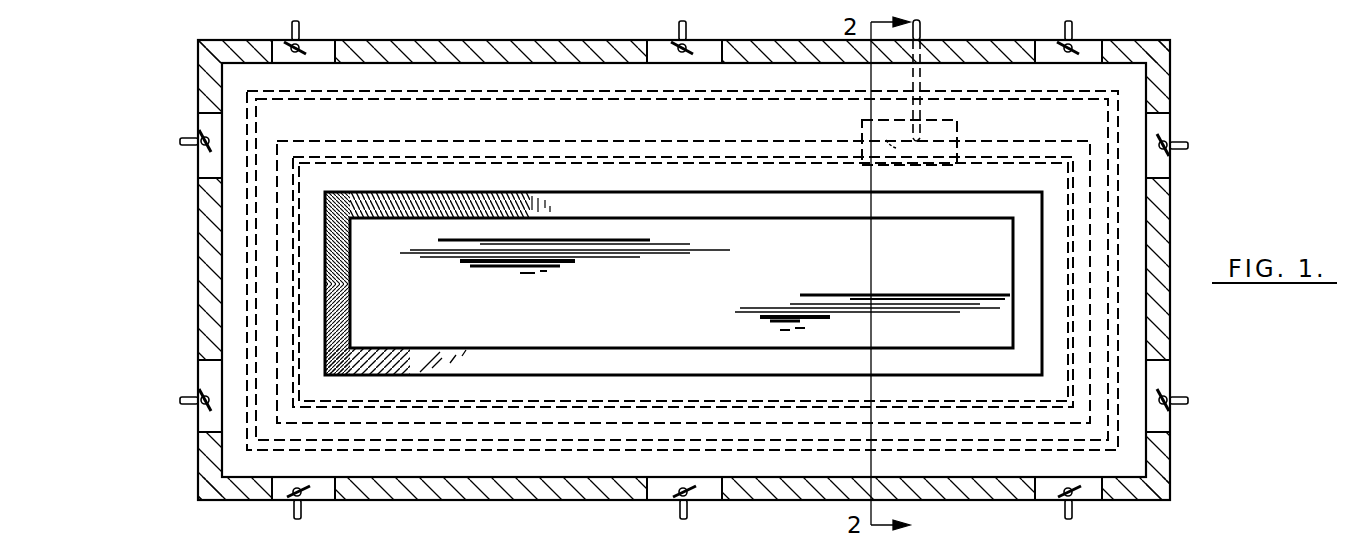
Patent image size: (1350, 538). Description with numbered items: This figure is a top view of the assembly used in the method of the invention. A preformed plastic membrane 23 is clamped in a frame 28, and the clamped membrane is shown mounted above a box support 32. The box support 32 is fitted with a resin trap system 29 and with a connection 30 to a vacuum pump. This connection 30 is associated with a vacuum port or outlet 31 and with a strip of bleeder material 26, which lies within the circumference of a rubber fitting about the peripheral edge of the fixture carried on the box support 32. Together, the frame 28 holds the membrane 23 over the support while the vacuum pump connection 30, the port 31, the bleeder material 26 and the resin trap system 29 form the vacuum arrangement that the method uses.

The preformed plastic membrane 23 is at (706, 292).
The strip of bleeder material 26 is at (613, 150).
The frame 28 is at (327, 44).
The resin trap system 29 is at (862, 131).
The connection to a vacuum pump 30 is at (921, 27).
The vacuum port or outlet 31 is at (889, 143).
The box support 32 is at (418, 90).